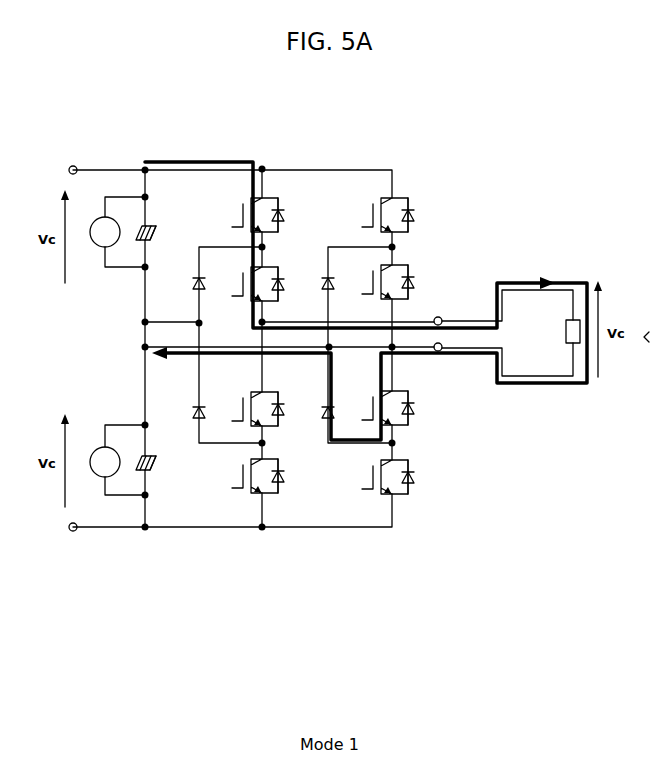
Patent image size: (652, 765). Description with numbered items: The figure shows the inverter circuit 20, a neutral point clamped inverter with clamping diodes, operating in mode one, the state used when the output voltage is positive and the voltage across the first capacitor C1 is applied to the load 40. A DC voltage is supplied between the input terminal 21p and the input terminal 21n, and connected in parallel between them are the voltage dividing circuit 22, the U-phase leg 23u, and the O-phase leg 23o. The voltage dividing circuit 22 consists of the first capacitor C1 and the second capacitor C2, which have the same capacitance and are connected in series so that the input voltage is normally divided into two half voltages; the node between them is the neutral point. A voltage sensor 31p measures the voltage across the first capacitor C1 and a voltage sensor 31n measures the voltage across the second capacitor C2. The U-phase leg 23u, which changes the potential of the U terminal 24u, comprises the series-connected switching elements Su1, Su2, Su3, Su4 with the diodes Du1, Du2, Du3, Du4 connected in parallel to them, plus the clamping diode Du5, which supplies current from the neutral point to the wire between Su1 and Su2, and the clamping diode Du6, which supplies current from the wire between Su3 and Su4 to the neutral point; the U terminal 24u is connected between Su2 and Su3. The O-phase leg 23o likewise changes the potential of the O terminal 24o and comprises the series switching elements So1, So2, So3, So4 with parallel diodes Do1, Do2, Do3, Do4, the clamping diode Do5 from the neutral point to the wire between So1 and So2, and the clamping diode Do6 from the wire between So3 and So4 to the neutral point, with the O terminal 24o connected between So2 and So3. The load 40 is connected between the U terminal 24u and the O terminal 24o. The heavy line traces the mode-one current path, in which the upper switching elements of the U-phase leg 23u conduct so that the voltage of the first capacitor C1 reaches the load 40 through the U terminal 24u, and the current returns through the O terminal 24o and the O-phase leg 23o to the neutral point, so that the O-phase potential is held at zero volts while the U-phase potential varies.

The inverter circuit 20 is at (441, 149).
The input terminal 21p is at (74, 166).
The input terminal 21n is at (73, 531).
The voltage dividing circuit 22 is at (163, 540).
The U-phase leg 23u is at (292, 540).
The O-phase leg 23o is at (423, 540).
The U terminal 24u is at (442, 317).
The O terminal 24o is at (442, 351).
The voltage sensor 31p is at (101, 246).
The voltage sensor 31n is at (101, 475).
The load 40 is at (565, 331).
The first capacitor C1 is at (154, 228).
The second capacitor C2 is at (156, 457).
The switching element Su1 is at (238, 226).
The switching element Su2 is at (238, 296).
The switching element Su3 is at (238, 422).
The switching element Su4 is at (238, 490).
The switching element So1 is at (368, 226).
The switching element So2 is at (368, 296).
The switching element So3 is at (368, 422).
The switching element So4 is at (368, 490).
The diode Du1 is at (282, 213).
The diode Du2 is at (282, 283).
The diode Du3 is at (282, 409).
The diode Du4 is at (282, 477).
The diode Du5 is at (195, 283).
The diode Du6 is at (194, 410).
The diode Do1 is at (412, 215).
The diode Do2 is at (412, 283).
The diode Do3 is at (412, 409).
The diode Do4 is at (412, 477).
The diode Do5 is at (324, 288).
The diode Do6 is at (324, 416).